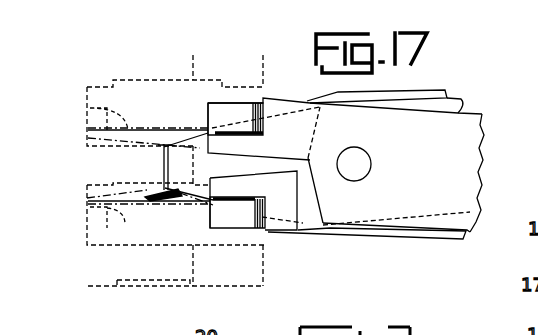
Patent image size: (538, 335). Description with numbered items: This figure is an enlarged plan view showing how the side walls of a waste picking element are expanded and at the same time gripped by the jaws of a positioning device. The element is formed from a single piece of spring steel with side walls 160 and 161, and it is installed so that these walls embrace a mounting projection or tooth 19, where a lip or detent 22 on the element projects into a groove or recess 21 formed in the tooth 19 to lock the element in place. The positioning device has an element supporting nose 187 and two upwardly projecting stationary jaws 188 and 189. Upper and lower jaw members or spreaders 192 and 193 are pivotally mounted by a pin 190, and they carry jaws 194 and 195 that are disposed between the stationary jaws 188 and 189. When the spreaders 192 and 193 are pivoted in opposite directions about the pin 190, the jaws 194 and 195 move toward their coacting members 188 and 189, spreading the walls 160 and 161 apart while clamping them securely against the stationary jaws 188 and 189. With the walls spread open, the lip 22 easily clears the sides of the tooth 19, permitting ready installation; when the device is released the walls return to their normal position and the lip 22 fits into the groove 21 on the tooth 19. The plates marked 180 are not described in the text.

The tooth 19 is at (112, 150).
The groove 21 is at (117, 183).
The lip 22 is at (152, 203).
The side wall 160 is at (88, 228).
The side wall 161 is at (85, 108).
The spring plate 180 is at (420, 92).
The nose 187 is at (172, 163).
The stationary jaw 188 is at (222, 112).
The stationary jaw 189 is at (227, 222).
The pin 190 is at (362, 162).
The spreader 192 is at (465, 150).
The spreader 193 is at (455, 100).
The jaw 194 is at (208, 132).
The jaw 195 is at (193, 201).